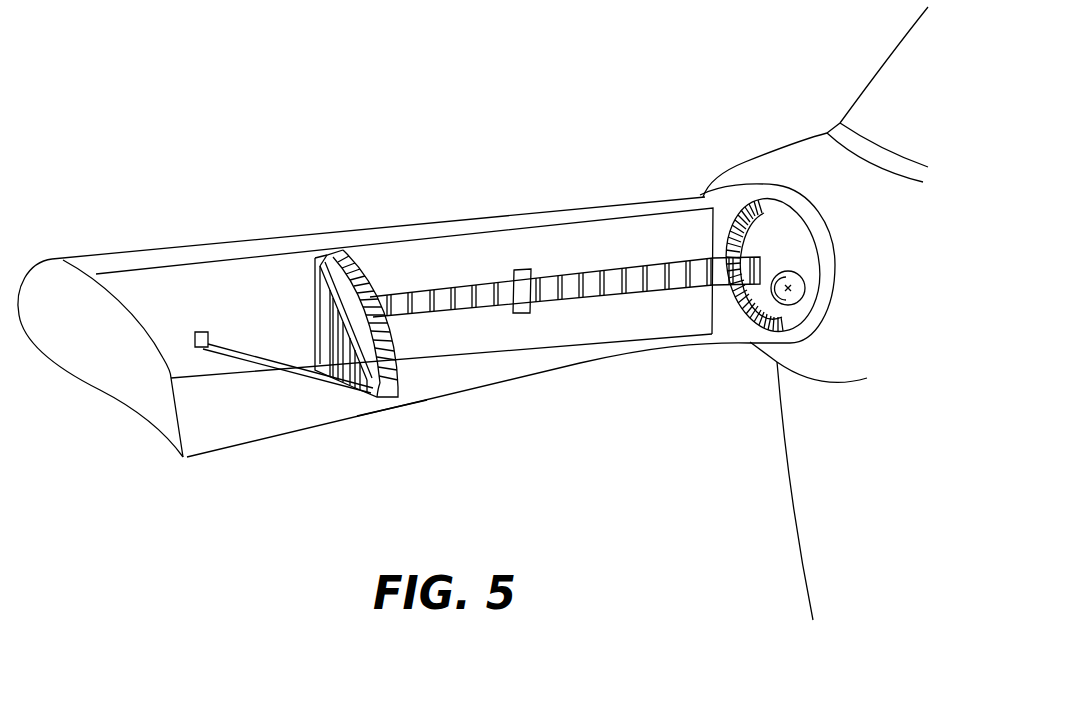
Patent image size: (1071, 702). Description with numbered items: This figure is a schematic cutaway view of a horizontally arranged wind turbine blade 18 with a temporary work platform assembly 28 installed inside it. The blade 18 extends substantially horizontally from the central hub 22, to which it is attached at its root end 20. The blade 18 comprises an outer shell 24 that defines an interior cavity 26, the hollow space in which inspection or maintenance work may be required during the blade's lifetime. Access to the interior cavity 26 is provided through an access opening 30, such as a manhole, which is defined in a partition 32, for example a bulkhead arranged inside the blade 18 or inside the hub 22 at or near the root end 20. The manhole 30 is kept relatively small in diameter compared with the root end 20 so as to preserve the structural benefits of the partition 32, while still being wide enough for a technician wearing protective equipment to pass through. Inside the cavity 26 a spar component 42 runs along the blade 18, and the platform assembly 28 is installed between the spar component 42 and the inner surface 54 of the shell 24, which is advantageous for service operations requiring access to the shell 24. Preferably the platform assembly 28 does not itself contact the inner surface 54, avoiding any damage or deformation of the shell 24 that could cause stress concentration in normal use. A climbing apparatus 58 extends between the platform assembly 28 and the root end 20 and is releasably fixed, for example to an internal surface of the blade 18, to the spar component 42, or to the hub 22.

The wind turbine blade 18 is at (247, 218).
The root end 20 is at (813, 230).
The central hub 22 is at (782, 157).
The outer shell 24 is at (493, 385).
The interior cavity 26 is at (272, 412).
The work platform assembly 28 is at (372, 272).
The access opening 30 is at (790, 273).
The partition 32 is at (773, 265).
The spar component 42 is at (500, 242).
The inner surface 54 is at (425, 387).
The climbing apparatus 58 is at (448, 277).